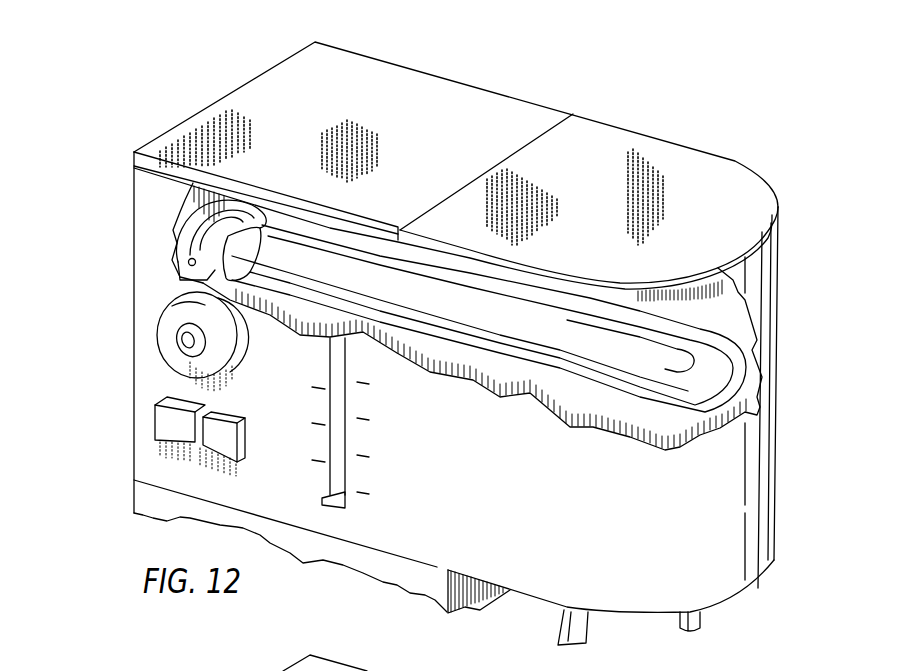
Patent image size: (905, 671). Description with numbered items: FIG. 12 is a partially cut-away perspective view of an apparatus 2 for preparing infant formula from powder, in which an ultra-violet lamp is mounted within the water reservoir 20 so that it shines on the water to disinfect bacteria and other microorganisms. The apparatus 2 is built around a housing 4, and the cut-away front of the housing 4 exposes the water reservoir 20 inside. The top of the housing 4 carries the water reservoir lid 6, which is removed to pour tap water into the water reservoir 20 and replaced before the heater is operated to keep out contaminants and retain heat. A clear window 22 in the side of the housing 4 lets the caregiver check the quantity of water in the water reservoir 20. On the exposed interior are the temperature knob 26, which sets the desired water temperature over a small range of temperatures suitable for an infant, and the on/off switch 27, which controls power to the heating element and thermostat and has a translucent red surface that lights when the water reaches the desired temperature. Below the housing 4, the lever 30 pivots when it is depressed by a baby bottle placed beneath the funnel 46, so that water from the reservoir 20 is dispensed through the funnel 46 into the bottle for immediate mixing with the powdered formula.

The apparatus 2 is at (463, 76).
The housing 4 is at (128, 232).
The water reservoir lid 6 is at (713, 149).
The water reservoir 20 is at (686, 440).
The clear window 22 is at (325, 494).
The knob 26 is at (158, 334).
The on/off switch 27 is at (158, 420).
The lever 30 is at (584, 625).
The funnel 46 is at (704, 613).